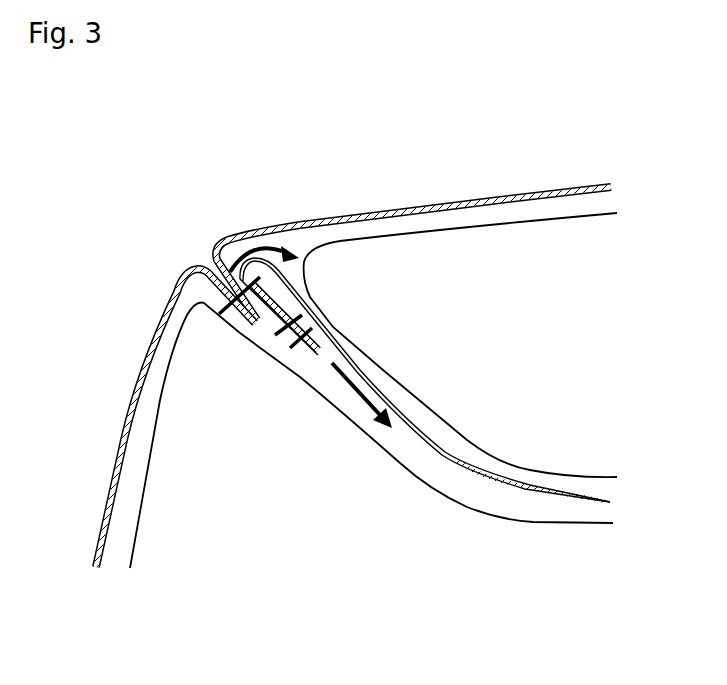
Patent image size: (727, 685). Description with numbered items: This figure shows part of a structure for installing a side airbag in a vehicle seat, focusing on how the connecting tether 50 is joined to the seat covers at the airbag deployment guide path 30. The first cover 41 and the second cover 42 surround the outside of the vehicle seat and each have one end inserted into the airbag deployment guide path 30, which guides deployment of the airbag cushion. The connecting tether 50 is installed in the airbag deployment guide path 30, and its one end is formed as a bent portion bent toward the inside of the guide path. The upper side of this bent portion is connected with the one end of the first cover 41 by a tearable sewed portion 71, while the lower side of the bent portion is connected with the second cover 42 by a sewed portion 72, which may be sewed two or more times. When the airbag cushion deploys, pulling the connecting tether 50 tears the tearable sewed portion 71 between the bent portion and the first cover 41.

The airbag deployment guide path 30 is at (460, 450).
The first cover 41 is at (160, 333).
The second cover 42 is at (330, 218).
The connecting tether 50 is at (403, 412).
The tearable sewed portion 71 is at (218, 318).
The sewed portion 72 is at (276, 338).